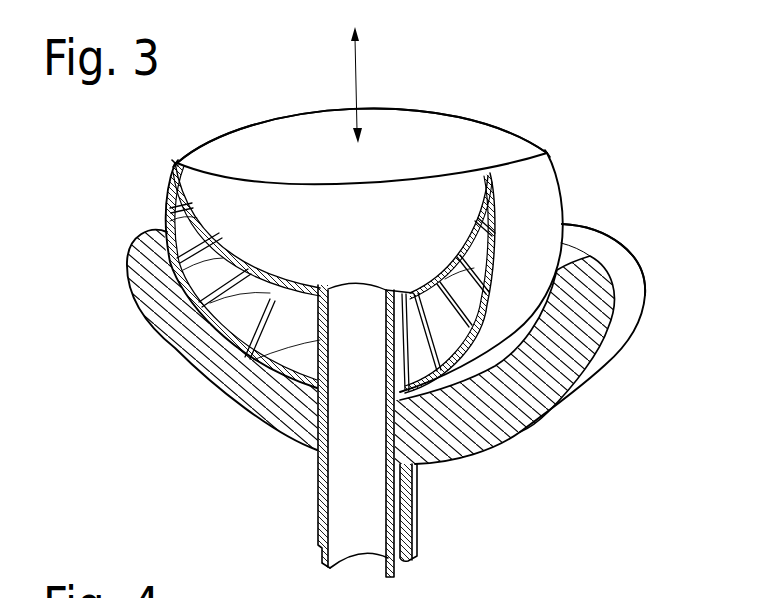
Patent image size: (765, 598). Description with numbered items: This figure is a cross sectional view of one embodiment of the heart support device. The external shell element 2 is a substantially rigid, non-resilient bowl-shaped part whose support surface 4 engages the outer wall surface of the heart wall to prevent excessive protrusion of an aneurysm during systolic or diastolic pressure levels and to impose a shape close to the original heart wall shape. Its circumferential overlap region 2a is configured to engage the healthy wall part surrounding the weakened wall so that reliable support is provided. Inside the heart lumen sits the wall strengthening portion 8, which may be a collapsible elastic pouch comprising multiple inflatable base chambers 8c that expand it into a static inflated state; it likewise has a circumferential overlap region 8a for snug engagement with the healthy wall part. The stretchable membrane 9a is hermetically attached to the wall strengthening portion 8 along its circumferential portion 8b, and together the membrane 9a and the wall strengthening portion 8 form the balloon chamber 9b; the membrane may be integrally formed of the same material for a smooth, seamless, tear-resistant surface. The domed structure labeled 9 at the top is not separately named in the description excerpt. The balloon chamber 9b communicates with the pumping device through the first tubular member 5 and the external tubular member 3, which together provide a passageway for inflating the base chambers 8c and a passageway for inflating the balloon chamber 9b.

The external shell element 2 is at (540, 418).
The circumferential overlap region 2a is at (620, 262).
The external tubular member 3 is at (400, 567).
The support surface 4 is at (484, 392).
The first tubular member 5 is at (390, 408).
The wall strengthening portion 8 is at (166, 208).
The circumferential overlap region 8a is at (169, 169).
The circumferential portion 8b is at (177, 163).
The inflatable base chamber 8c is at (228, 313).
The lens 9 is at (416, 108).
The stretchable membrane 9a is at (267, 135).
The balloon chamber 9b is at (445, 195).